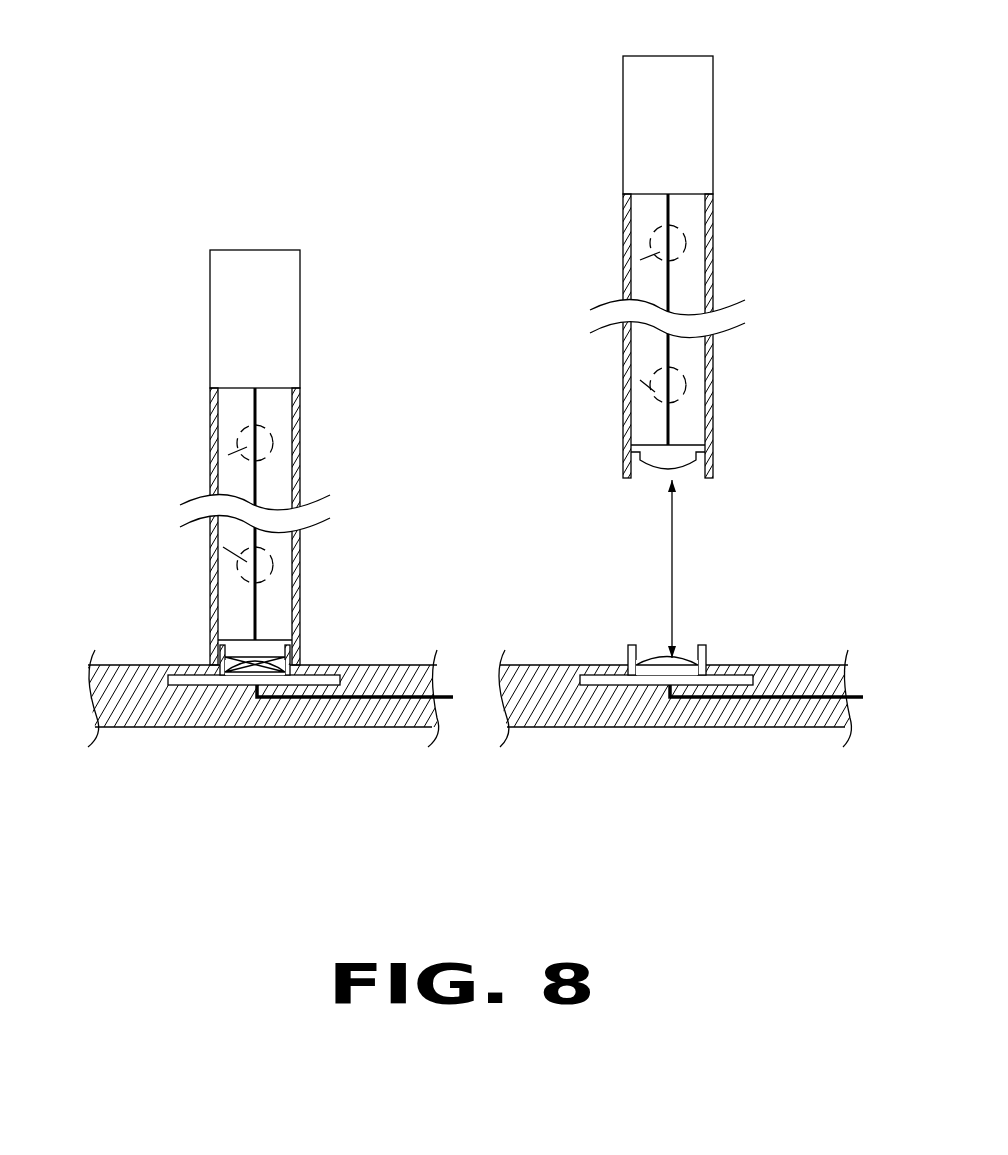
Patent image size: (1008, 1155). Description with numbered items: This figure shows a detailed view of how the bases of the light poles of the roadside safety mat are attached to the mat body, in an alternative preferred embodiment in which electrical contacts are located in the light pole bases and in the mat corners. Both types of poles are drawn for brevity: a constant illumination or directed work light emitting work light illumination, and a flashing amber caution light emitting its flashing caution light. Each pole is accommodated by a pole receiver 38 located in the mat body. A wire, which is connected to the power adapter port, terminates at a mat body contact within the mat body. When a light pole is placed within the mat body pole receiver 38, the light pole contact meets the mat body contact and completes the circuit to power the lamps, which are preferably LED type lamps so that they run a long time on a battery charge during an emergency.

The pole receiver 38 is at (690, 640).